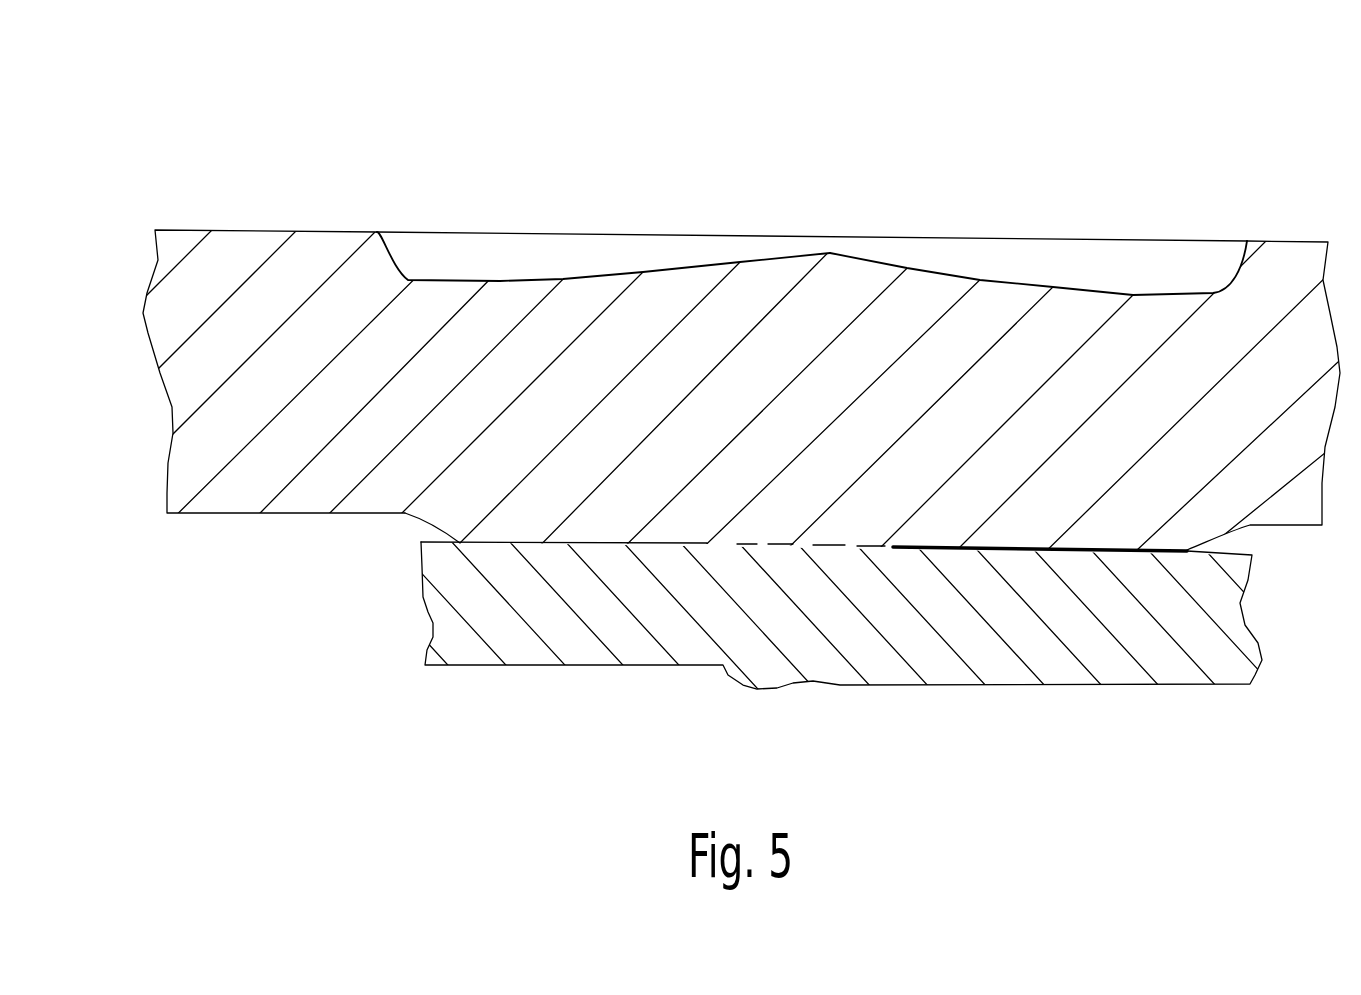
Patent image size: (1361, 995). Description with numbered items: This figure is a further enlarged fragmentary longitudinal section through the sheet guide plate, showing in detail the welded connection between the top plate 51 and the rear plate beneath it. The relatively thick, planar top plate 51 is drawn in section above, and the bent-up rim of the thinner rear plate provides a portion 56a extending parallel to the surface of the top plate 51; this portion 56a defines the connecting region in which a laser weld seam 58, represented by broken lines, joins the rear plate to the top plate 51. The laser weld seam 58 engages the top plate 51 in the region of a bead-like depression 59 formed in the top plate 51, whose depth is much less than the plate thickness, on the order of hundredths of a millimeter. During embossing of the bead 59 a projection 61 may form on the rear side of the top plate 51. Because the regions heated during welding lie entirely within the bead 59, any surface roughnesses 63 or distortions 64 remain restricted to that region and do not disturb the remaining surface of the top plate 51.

The top plate 51 is at (1263, 267).
The portion of the rim 56a is at (598, 638).
The laser weld seam 58 is at (803, 551).
The bead-like depression 59 is at (1097, 153).
The projection 61 is at (447, 517).
The surface roughnesses 63 is at (830, 253).
The distortions 64 is at (920, 258).